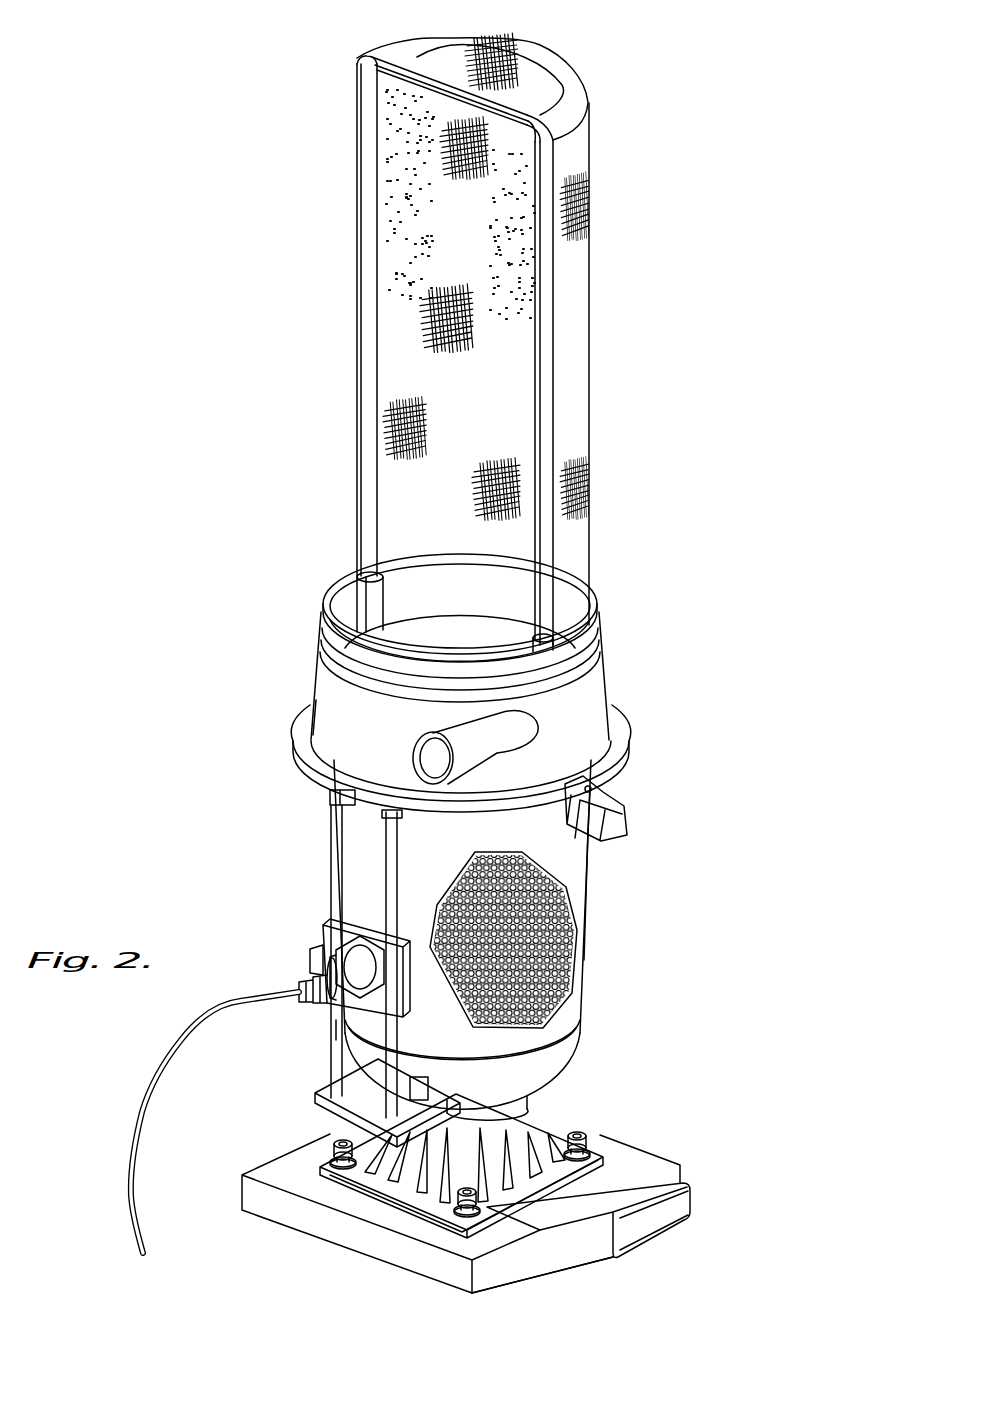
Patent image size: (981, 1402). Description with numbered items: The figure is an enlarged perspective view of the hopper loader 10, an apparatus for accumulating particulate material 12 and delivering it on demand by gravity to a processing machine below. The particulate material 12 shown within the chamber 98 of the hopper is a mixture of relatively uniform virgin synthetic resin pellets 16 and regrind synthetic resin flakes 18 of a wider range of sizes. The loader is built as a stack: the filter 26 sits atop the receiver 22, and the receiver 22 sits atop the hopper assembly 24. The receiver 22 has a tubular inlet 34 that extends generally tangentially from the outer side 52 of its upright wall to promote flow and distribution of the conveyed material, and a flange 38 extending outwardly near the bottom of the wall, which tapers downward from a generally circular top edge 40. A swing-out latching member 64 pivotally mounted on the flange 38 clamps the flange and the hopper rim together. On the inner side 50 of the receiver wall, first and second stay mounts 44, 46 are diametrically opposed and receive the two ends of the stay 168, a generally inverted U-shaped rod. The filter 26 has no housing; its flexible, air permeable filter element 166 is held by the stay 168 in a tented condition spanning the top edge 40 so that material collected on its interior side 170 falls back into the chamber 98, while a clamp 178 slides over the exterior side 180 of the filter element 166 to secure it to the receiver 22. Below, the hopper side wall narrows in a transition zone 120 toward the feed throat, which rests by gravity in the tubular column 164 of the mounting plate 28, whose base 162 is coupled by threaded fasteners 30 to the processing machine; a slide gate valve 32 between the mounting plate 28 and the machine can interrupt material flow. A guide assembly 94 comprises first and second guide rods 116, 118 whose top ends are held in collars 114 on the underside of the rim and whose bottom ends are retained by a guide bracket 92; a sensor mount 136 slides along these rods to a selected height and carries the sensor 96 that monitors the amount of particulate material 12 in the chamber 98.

The hopper loader 10 is at (170, 553).
The particulate material 12 is at (580, 910).
The synthetic resin pellets 16 is at (575, 932).
The synthetic resin flakes 18 is at (575, 1003).
The receiver 22 is at (604, 690).
The hopper assembly 24 is at (590, 957).
The filter 26 is at (590, 90).
The mounting plate 28 is at (520, 1110).
The threaded fasteners 30 is at (592, 1140).
The slide gate valve 32 is at (584, 1237).
The tubular inlet 34 is at (483, 748).
The flange 38 is at (622, 732).
The top edge 40 is at (345, 590).
The first stay mount 44 is at (372, 617).
The second stay mount 46 is at (535, 648).
The inner side 50 is at (462, 583).
The outer side 52 is at (330, 712).
The swing-out latching member 64 is at (606, 800).
The guide bracket 92 is at (325, 1106).
The guide assembly 94 is at (340, 1040).
The sensor 96 is at (335, 942).
The chamber 98 is at (520, 866).
The collars 114 is at (383, 813).
The first guide rod 116 is at (342, 856).
The second guide rod 118 is at (392, 862).
The transition zone 120 is at (530, 1072).
The sensor mount 136 is at (322, 945).
The base 162 is at (370, 1182).
The tubular column 164 is at (435, 1167).
The filter element 166 is at (390, 297).
The stay 168 is at (372, 383).
The interior side 170 is at (400, 470).
The clamp 178 is at (598, 632).
The exterior side 180 is at (582, 288).